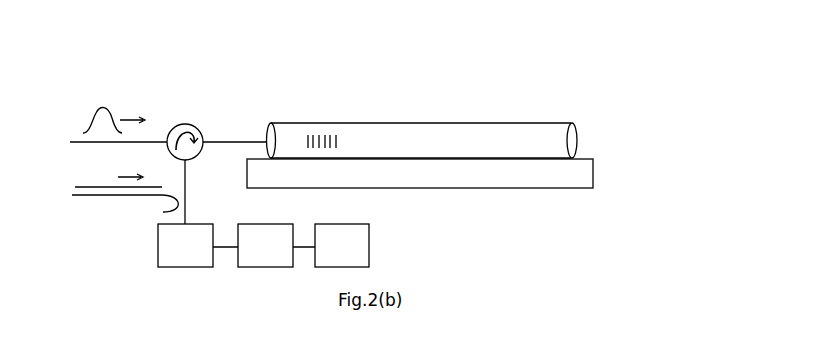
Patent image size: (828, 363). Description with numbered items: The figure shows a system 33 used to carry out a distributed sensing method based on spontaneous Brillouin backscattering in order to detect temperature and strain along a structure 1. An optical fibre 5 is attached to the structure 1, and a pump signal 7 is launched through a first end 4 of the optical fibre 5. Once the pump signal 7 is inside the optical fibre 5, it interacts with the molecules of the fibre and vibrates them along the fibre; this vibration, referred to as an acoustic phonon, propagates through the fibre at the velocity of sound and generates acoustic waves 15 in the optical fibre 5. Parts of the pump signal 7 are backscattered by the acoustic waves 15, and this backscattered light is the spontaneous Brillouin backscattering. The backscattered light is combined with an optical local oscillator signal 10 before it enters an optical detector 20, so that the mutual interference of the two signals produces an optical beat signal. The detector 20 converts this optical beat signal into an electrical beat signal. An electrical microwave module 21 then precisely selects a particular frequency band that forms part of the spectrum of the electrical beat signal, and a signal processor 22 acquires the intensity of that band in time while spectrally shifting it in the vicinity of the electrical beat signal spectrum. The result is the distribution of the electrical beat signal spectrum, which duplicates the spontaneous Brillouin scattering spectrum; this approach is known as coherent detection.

The structure 1 is at (328, 184).
The first end 4 is at (268, 133).
The optical fibre 5 is at (411, 151).
The pump signal 7 is at (105, 107).
The optical local oscillator signal 10 is at (107, 187).
The acoustic waves 15 is at (323, 133).
The optical detector 20 is at (185, 245).
The electrical microwave module 21 is at (265, 245).
The signal processor 22 is at (342, 245).
The system 33 is at (629, 89).